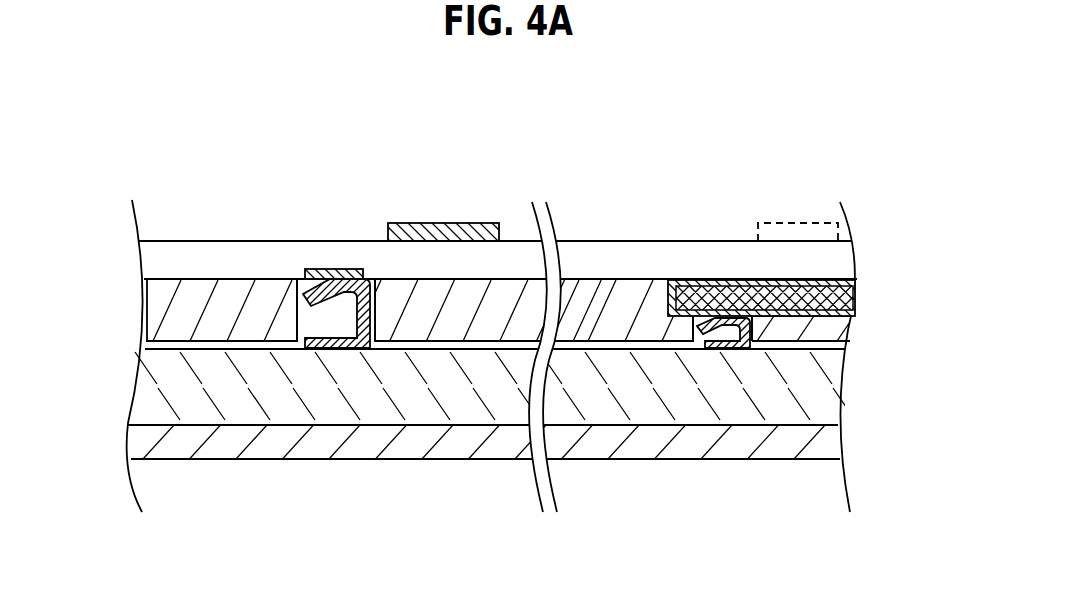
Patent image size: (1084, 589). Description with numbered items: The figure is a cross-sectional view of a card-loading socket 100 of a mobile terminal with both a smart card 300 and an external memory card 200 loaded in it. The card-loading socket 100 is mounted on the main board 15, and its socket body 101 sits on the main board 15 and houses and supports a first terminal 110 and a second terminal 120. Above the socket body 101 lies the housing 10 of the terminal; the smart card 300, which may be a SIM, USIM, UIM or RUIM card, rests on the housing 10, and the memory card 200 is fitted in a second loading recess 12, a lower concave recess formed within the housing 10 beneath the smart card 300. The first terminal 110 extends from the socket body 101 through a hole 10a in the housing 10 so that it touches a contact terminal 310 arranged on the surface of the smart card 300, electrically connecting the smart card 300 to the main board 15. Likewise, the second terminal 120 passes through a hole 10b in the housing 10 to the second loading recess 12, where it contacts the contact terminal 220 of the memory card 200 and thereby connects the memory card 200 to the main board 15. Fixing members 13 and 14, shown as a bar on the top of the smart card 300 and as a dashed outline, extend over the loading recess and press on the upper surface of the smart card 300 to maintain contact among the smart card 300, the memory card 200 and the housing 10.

The card-loading socket 100 is at (846, 391).
The smart card 300 is at (192, 257).
The housing 10 is at (441, 325).
The hole 10a is at (340, 317).
The hole 10b is at (702, 345).
The socket body 101 is at (160, 388).
The main board 15 is at (215, 443).
The fixing member 13 is at (447, 225).
The contact terminal 310 is at (325, 272).
The first terminal 110 is at (340, 277).
The second terminal 120 is at (720, 350).
The second loading recess 12 is at (778, 237).
The contact terminal 220 is at (704, 282).
The memory card 200 is at (788, 290).
The fixing member 14 is at (777, 222).